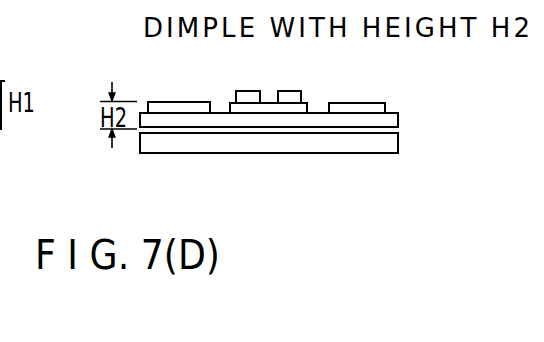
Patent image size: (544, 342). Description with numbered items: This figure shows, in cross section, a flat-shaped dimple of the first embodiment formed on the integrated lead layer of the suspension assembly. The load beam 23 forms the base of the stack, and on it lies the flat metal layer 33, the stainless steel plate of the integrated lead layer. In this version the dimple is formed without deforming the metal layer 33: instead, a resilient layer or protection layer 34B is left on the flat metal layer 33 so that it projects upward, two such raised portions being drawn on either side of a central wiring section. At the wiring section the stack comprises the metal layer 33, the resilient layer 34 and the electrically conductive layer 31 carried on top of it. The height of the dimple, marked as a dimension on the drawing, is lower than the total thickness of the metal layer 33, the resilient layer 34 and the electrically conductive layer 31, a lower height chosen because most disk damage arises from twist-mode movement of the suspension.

The load beam 23 is at (398, 145).
The metal plate 33 is at (398, 121).
The resilient layer or protection layer 34B is at (177, 102).
The resilient layer 34 is at (273, 108).
The electrically conductive layer 31 is at (253, 91).